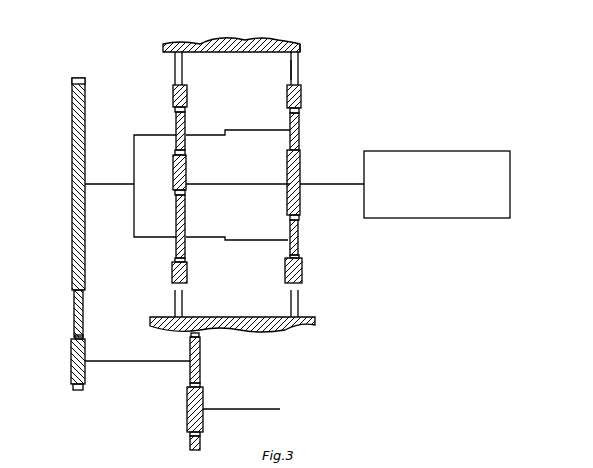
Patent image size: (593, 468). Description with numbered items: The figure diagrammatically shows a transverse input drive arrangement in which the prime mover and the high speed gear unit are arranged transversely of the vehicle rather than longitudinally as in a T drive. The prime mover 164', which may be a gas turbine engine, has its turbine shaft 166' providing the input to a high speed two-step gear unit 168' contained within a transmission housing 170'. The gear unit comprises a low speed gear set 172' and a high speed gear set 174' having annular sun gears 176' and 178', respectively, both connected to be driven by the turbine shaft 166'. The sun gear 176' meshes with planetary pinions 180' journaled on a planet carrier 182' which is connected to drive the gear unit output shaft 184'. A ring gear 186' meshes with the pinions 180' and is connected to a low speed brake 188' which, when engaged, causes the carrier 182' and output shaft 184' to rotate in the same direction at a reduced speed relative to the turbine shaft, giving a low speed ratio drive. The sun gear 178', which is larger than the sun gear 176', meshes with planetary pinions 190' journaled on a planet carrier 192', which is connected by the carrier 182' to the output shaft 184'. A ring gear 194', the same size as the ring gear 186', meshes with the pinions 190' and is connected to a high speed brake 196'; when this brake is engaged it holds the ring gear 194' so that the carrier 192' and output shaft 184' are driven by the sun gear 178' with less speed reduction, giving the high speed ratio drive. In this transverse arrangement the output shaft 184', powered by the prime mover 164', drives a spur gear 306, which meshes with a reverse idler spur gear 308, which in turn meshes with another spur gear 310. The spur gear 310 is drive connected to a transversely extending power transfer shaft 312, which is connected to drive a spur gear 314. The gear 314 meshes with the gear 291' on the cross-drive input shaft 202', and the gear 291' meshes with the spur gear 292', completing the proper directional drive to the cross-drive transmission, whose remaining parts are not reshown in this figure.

The prime mover 164' is at (437, 161).
The turbine shaft 166' is at (332, 161).
The high speed two-step gear unit 168' is at (264, 47).
The transmission housing 170' is at (333, 45).
The low speed gear set 172' is at (211, 170).
The high speed gear set 174' is at (275, 185).
The sun gear 176' is at (209, 224).
The sun gear 178' is at (271, 258).
The planetary pinions 180' is at (208, 121).
The planet carrier 182' is at (212, 168).
The output shaft 184' is at (109, 166).
The ring gear 186' is at (205, 90).
The low speed brake 188' is at (231, 36).
The planetary pinions 190' is at (329, 131).
The planet carrier 192' is at (238, 116).
The ring gear 194' is at (327, 99).
The high speed brake 196' is at (329, 70).
The cross-drive input shaft 202' is at (248, 394).
The spur gear 291' is at (165, 407).
The spur gear 292' is at (164, 441).
The spur gear 306 is at (70, 115).
The reverse idler spur gear 308 is at (72, 313).
The spur gear 310 is at (70, 355).
The power transfer shaft 312 is at (108, 361).
The spur gear 314 is at (201, 361).